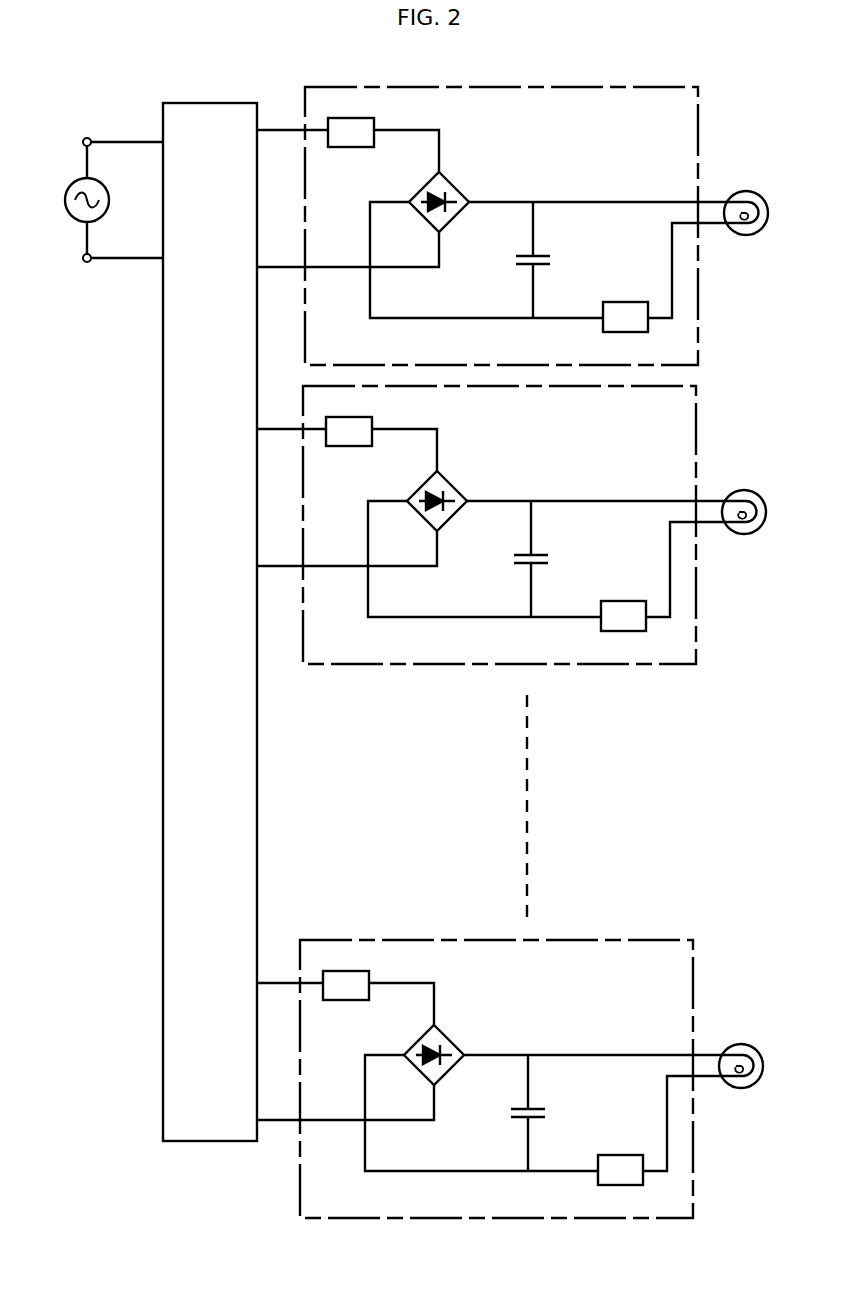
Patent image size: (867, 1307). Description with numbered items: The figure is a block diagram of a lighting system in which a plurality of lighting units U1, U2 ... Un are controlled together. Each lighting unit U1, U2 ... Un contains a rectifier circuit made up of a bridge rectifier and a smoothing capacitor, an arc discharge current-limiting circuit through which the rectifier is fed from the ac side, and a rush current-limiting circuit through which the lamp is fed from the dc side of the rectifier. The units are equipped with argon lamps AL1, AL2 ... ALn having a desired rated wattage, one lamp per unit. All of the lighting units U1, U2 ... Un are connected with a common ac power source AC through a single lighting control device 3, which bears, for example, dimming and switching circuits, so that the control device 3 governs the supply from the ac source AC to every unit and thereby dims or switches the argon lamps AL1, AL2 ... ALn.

The lighting control device 3 is at (169, 536).
The ac power source AC is at (101, 200).
The argon lamp AL1 is at (753, 227).
The argon lamp AL2 is at (751, 526).
The argon lamp ALn is at (748, 1080).
The lighting unit U1 is at (699, 318).
The lighting unit U2 is at (526, 528).
The lighting unit Un is at (523, 1082).